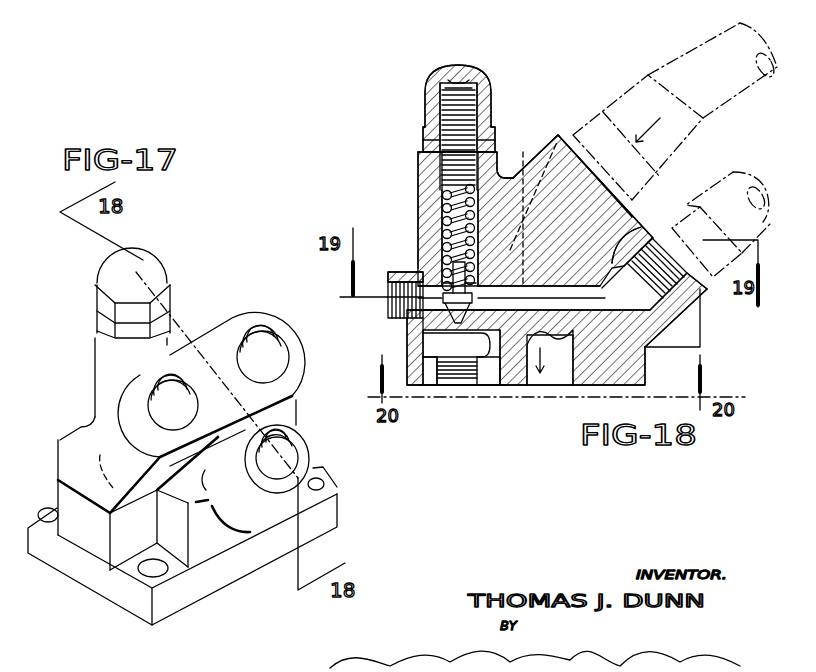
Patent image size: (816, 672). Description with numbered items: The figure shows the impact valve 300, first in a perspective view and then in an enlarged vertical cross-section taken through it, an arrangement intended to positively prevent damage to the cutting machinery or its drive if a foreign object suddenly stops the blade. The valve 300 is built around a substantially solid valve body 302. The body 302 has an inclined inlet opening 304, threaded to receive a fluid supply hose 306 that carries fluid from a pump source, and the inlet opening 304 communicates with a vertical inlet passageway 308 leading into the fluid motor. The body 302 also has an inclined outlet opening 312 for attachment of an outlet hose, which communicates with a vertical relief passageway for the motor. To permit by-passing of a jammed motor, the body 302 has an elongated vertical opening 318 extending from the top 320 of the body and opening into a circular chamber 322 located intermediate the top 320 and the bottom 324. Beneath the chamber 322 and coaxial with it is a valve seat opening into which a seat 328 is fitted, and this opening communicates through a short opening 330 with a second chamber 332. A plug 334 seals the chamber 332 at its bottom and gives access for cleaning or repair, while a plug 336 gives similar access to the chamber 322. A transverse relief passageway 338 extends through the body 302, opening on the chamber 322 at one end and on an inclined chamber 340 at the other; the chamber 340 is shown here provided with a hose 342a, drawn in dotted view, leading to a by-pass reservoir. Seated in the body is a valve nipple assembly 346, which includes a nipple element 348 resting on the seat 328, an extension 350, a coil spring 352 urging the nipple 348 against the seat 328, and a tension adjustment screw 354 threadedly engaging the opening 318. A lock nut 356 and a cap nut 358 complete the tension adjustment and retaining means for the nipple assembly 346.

In FIG. 17, the impact valve 300 is at (221, 293).
In FIG. 17, the valve body 302 is at (265, 547).
In FIG. 17, the inlet opening 304 is at (254, 338).
In FIG. 18, the inlet opening 304 is at (560, 138).
In FIG. 18, the fluid supply hose 306 is at (640, 77).
In FIG. 18, the vertical inlet passageway 308 is at (548, 434).
In FIG. 17, the outlet opening 312 is at (186, 415).
In FIG. 18, the elongated vertical opening 318 is at (446, 247).
In FIG. 17, the top 320 is at (94, 338).
In FIG. 18, the top 320 is at (497, 165).
In FIG. 18, the circular chamber 322 is at (533, 388).
In FIG. 18, the bottom 324 is at (420, 392).
In FIG. 18, the seat 328 is at (445, 312).
In FIG. 18, the short opening 330 is at (407, 348).
In FIG. 18, the chamber 332 is at (441, 390).
In FIG. 18, the plug 334 is at (468, 388).
In FIG. 18, the plug 336 is at (392, 284).
In FIG. 18, the transverse relief passageway 338 is at (618, 238).
In FIG. 17, the inclined chamber 340 is at (292, 450).
In FIG. 18, the inclined chamber 340 is at (683, 298).
In FIG. 18, the hose 342a is at (707, 193).
In FIG. 18, the valve nipple assembly 346 is at (438, 205).
In FIG. 18, the nipple element 348 is at (441, 296).
In FIG. 18, the extension 350 is at (440, 262).
In FIG. 18, the coil spring 352 is at (442, 225).
In FIG. 18, the tension adjustment screw 354 is at (442, 103).
In FIG. 17, the lock nut 356 is at (97, 318).
In FIG. 18, the lock nut 356 is at (430, 137).
In FIG. 17, the cap nut 358 is at (150, 258).
In FIG. 18, the cap nut 358 is at (441, 66).